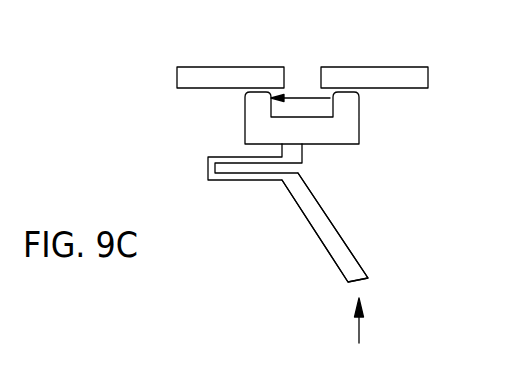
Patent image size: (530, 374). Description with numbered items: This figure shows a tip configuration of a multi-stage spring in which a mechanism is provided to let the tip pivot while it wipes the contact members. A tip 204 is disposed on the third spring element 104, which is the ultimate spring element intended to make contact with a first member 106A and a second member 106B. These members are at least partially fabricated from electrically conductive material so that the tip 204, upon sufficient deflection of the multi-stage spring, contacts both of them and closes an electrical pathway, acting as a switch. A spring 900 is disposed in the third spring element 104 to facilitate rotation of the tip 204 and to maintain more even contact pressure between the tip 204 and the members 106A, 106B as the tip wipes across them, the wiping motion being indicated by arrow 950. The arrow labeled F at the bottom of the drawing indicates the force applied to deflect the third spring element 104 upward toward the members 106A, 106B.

The first member 106A is at (217, 89).
The second member 106B is at (390, 90).
The tip 204 is at (359, 124).
The arrow 950 is at (301, 97).
The spring 900 is at (228, 150).
The third spring element 104 is at (338, 238).
The applied force F is at (358, 335).